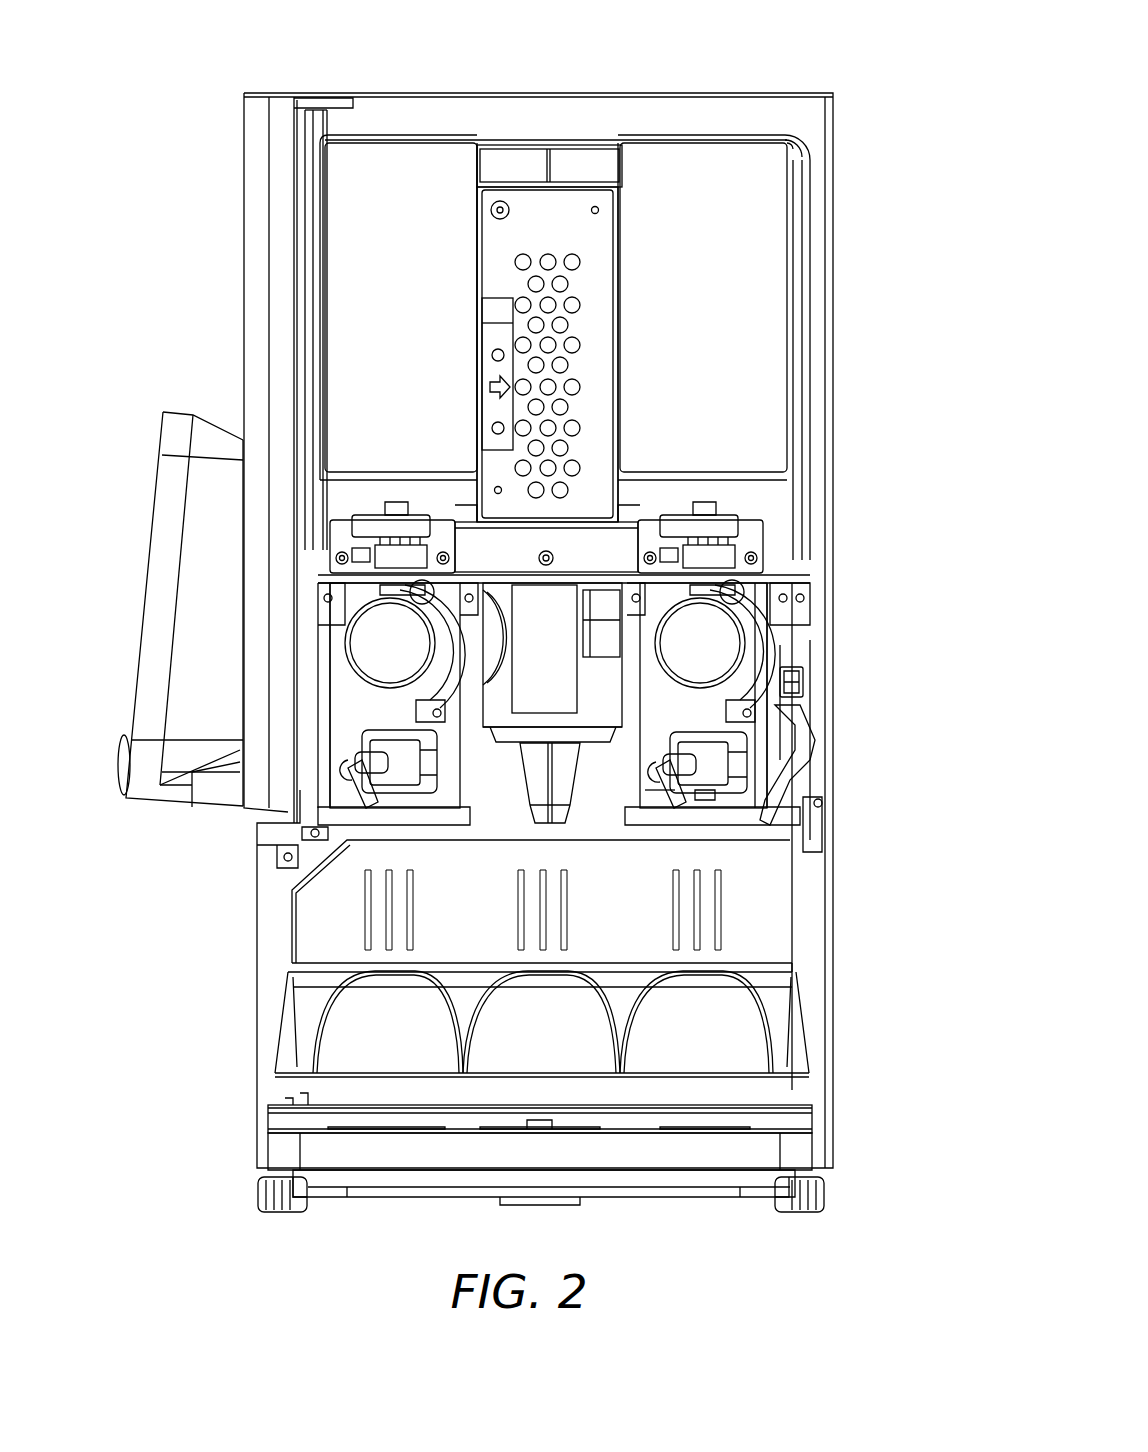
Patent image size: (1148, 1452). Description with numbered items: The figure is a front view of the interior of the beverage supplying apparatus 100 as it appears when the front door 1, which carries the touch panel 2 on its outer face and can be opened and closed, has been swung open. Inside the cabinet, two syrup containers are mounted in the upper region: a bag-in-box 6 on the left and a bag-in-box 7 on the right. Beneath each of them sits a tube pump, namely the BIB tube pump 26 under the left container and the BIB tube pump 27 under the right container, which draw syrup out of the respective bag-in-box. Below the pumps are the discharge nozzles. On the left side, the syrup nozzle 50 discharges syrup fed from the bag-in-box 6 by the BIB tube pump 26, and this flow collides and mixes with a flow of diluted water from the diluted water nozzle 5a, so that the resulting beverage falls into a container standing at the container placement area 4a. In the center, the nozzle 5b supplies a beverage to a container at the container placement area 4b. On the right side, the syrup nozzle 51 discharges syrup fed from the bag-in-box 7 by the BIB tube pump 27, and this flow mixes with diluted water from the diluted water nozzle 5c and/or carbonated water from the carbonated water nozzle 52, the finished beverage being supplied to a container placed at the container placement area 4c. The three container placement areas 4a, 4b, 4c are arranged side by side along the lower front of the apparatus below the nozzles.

The beverage supplying apparatus 100 is at (730, 52).
The front door 1 is at (244, 241).
The touch panel 2 is at (153, 525).
The bag-in-box (BIB) 6 is at (357, 311).
The bag-in-box (BIB) 7 is at (740, 301).
The BIB tube pump 26 is at (385, 640).
The BIB tube pump 27 is at (705, 640).
The syrup nozzle 50 is at (398, 791).
The syrup nozzle 51 is at (705, 800).
The carbonated water nozzle 52 is at (772, 800).
The diluted water nozzle 5a is at (356, 800).
The nozzle 5b is at (562, 822).
The diluted water nozzle 5c is at (652, 797).
The container placement area 4a is at (348, 1021).
The container placement area 4b is at (497, 1060).
The container placement area 4c is at (740, 1013).